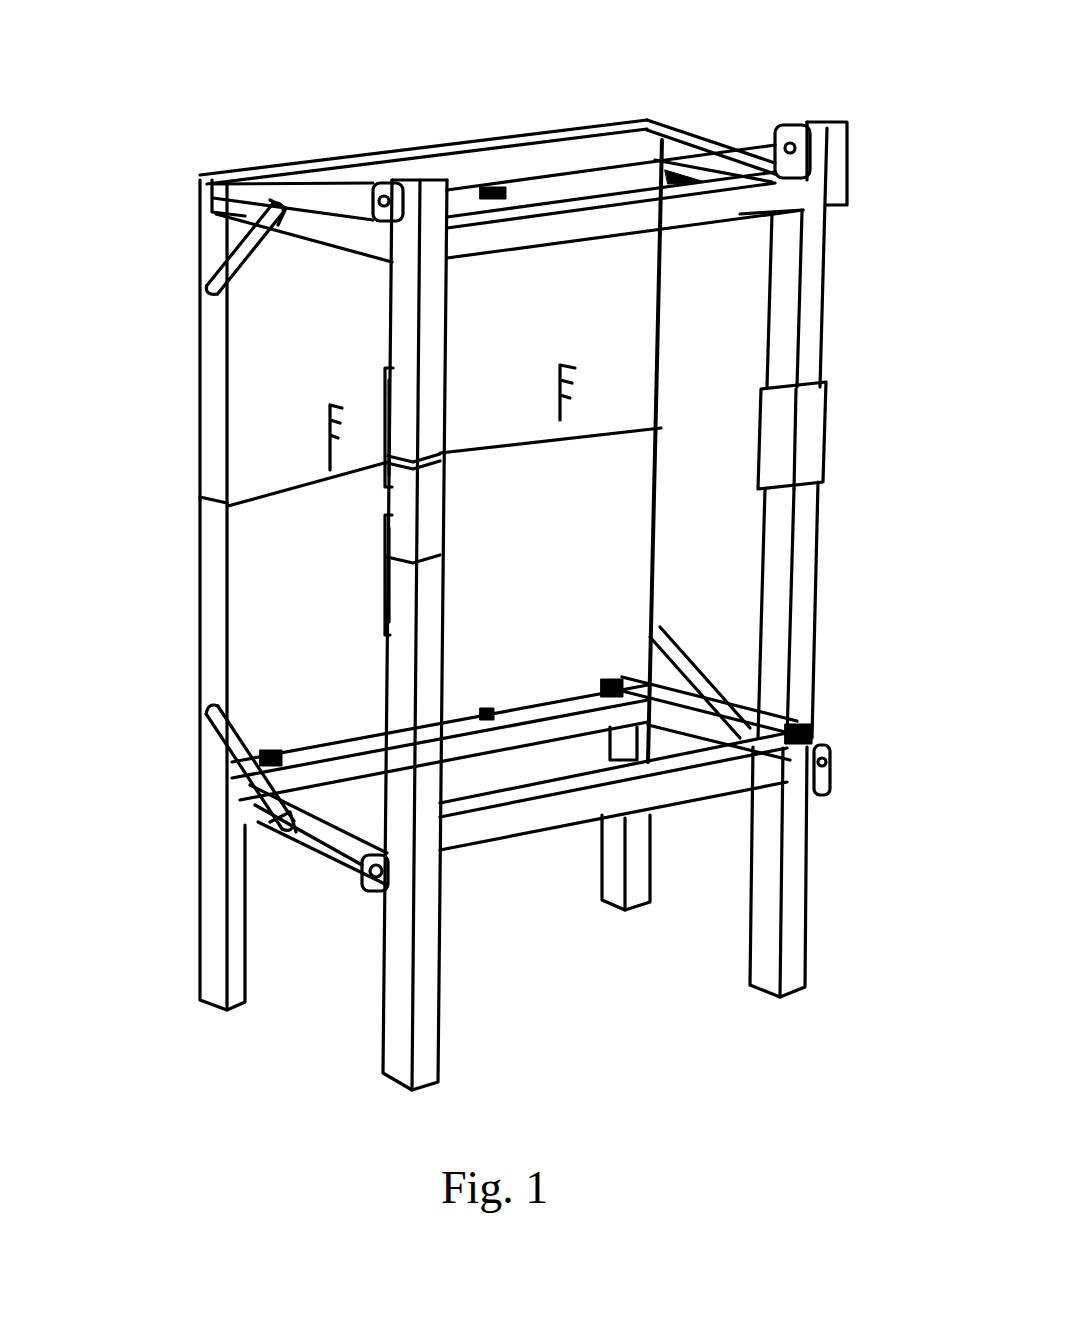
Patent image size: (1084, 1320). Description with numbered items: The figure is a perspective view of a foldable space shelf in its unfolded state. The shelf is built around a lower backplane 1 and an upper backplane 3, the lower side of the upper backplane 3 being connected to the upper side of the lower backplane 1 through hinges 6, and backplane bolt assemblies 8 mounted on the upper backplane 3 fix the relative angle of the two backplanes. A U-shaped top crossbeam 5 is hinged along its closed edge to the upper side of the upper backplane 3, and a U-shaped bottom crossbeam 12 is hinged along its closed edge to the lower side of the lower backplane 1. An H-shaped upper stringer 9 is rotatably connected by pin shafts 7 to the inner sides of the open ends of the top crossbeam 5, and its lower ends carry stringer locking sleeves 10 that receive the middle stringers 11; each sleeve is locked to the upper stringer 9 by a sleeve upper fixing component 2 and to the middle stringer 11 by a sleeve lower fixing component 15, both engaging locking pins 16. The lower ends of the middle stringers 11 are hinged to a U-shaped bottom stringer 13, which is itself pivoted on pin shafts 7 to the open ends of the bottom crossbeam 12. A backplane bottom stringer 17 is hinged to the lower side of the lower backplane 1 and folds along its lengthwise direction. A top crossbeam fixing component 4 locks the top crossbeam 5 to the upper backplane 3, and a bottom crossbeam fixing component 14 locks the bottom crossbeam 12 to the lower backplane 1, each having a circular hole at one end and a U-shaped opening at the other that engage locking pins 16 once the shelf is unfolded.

The lower backplane 1 is at (242, 598).
The sleeve upper fixing component 2 is at (390, 462).
The upper backplane 3 is at (240, 368).
The top crossbeam fixing component 4 is at (232, 250).
The top crossbeam 5 is at (278, 176).
The hinge 6 is at (485, 188).
The pin shaft 7 is at (778, 140).
The backplane bolt assembly 8 is at (560, 378).
The upper stringer 9 is at (808, 320).
The stringer locking sleeve 10 is at (803, 440).
The middle stringer 11 is at (795, 635).
The bottom crossbeam 12 is at (705, 735).
The bottom stringer 13 is at (780, 890).
The bottom crossbeam fixing component 14 is at (232, 752).
The sleeve lower fixing component 15 is at (395, 608).
The locking pin 16 is at (272, 203).
The backplane bottom stringer 17 is at (612, 883).